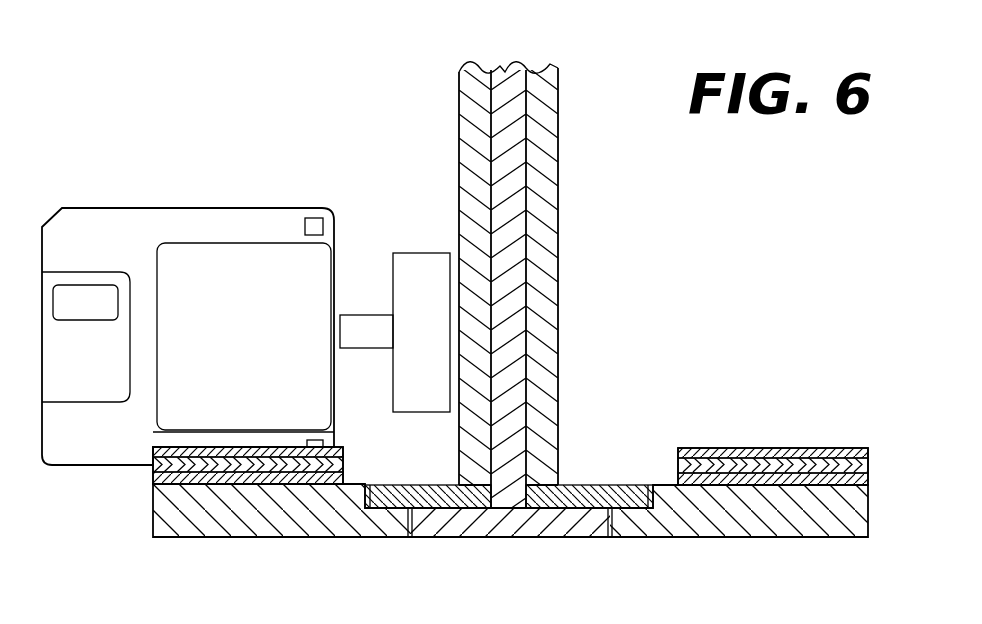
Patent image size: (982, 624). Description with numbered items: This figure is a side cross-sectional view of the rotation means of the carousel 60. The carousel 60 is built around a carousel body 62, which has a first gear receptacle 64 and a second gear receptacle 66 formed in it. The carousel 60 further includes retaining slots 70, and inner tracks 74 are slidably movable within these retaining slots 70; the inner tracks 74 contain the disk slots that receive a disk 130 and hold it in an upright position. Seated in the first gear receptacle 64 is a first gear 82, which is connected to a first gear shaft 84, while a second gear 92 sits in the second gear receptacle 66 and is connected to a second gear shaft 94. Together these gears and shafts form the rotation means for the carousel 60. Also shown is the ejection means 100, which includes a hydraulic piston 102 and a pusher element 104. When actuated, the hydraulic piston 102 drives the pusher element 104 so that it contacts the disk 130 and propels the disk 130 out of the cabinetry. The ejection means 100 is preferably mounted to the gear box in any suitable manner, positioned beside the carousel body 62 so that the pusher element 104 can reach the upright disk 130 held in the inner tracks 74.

The carousel 60 is at (152, 540).
The carousel body 62 is at (282, 520).
The first gear receptacle 64 is at (655, 486).
The second gear receptacle 66 is at (620, 540).
The retaining slots 70 is at (152, 479).
The inner tracks 74 is at (152, 470).
The first gear 82 is at (585, 486).
The first gear shaft 84 is at (541, 266).
The second gear 92 is at (553, 530).
The second gear shaft 94 is at (505, 66).
The ejection means 100 is at (246, 303).
The hydraulic piston 102 is at (425, 253).
The pusher element 104 is at (372, 315).
The disk 130 is at (255, 299).